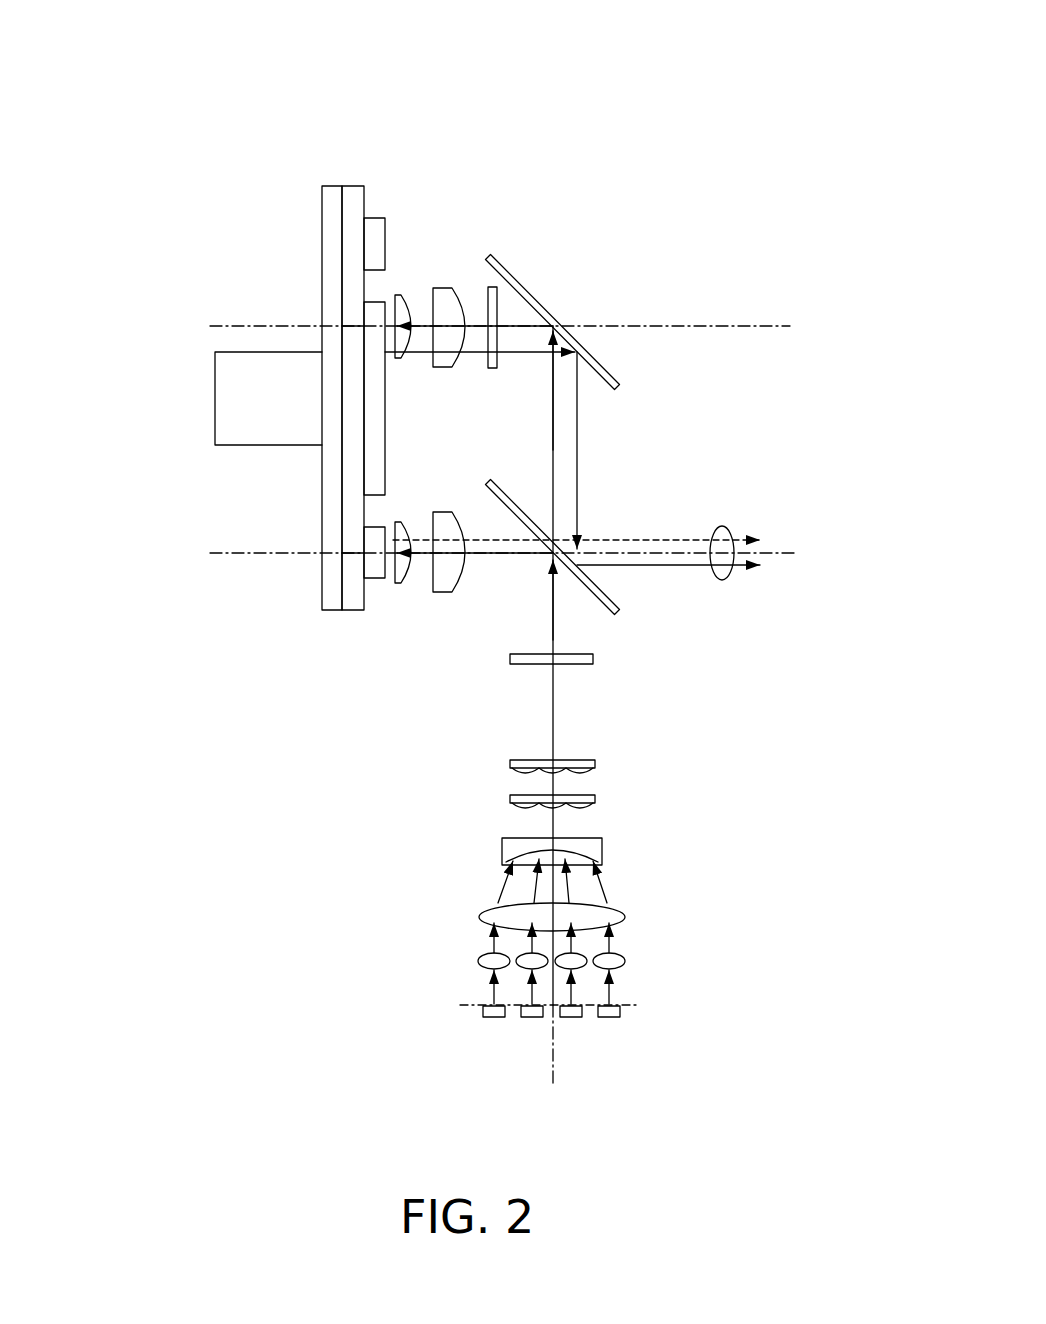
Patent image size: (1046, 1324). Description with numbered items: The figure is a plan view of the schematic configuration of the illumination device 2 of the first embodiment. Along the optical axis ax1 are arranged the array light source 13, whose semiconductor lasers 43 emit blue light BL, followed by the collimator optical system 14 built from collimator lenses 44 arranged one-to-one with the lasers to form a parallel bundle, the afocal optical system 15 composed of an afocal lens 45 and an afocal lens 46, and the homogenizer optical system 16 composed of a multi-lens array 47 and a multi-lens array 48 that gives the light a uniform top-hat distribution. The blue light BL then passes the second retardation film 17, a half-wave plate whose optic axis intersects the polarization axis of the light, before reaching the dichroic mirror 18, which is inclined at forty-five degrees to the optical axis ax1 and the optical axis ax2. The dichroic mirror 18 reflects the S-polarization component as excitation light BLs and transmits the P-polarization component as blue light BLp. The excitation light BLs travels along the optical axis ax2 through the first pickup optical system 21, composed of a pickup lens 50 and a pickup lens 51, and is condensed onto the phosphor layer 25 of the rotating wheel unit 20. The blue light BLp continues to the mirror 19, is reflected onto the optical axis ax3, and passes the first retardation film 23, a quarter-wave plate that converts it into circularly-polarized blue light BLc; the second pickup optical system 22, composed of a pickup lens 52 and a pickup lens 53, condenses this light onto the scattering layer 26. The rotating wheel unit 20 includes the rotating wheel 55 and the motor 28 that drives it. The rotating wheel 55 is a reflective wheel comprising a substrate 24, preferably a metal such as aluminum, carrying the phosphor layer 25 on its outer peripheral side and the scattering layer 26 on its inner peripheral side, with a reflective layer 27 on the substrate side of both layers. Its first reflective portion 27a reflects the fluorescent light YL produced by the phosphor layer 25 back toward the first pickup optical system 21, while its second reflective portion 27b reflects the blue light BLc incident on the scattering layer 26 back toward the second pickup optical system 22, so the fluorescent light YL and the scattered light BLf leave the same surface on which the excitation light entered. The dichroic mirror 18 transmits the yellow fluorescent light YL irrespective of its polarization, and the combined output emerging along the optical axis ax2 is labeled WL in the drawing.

The illumination device 2 is at (458, 115).
The array light source 13 is at (520, 1038).
The semiconductor laser 43 is at (495, 1017).
The collimator optical system 14 is at (521, 949).
The collimator lens 44 is at (620, 960).
The afocal optical system 15 is at (481, 884).
The afocal lens 45 is at (480, 912).
The afocal lens 46 is at (505, 853).
The homogenizer optical system 16 is at (476, 782).
The multi-lens array 47 is at (510, 797).
The multi-lens array 48 is at (510, 763).
The second retardation film 17 is at (595, 660).
The dichroic mirror 18 is at (608, 598).
The mirror 19 is at (607, 366).
The rotating wheel unit 20 is at (192, 270).
The first pickup optical system 21 is at (435, 610).
The pickup lens 50 is at (402, 580).
The pickup lens 51 is at (447, 580).
The second pickup optical system 22 is at (437, 264).
The pickup lens 52 is at (400, 296).
The pickup lens 53 is at (448, 296).
The first retardation film 23 is at (493, 370).
The substrate 24 is at (332, 192).
The phosphor layer 25 is at (373, 565).
The scattering layer 26 is at (382, 450).
The reflective layer 27 is at (355, 192).
The first reflective portion 27a is at (352, 565).
The second reflective portion 27b is at (352, 313).
The motor 28 is at (213, 400).
The rotating wheel 55 is at (303, 421).
The blue light BL is at (612, 996).
The blue light BLp is at (553, 452).
The excitation light BLs is at (500, 557).
The blue light BLc is at (428, 333).
The scattered light BLf is at (580, 450).
The fluorescent light YL is at (690, 540).
The white light WL is at (728, 582).
The optical axis ax1 is at (556, 1060).
The optical axis ax2 is at (793, 552).
The optical axis ax3 is at (795, 332).